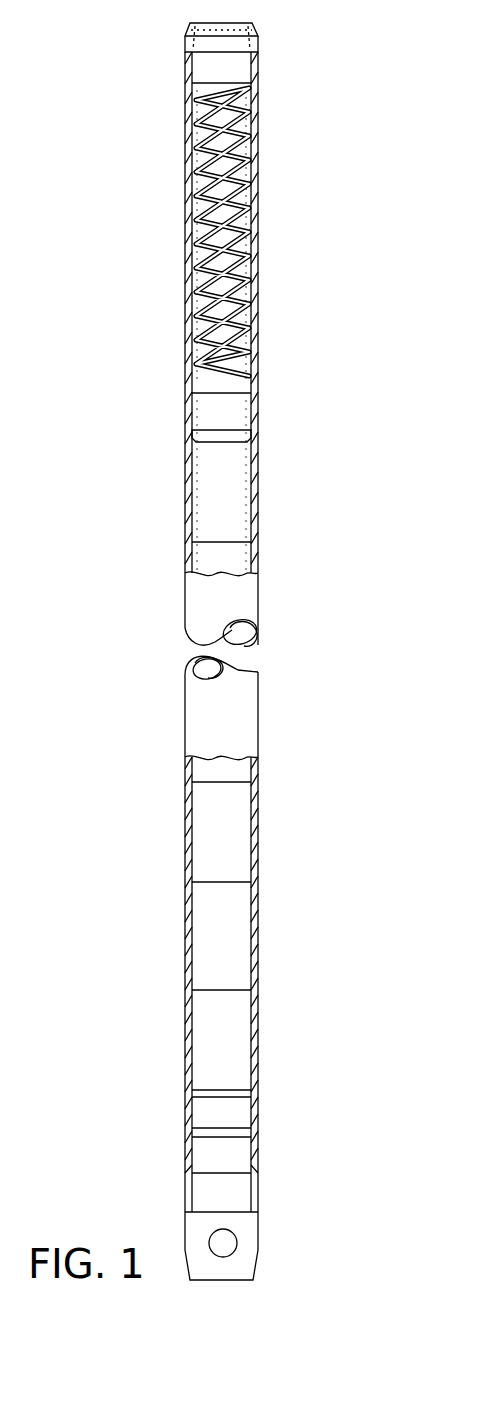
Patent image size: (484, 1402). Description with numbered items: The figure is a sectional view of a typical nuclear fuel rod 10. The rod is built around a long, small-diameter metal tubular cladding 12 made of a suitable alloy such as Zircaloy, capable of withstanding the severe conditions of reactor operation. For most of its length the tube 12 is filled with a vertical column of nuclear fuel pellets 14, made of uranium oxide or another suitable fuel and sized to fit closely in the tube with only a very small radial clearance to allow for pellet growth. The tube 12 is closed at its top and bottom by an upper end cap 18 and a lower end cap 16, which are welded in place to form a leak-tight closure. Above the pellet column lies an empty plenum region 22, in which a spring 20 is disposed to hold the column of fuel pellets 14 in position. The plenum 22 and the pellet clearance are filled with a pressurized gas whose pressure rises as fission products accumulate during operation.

The fuel rod 10 is at (335, 494).
The tubular cladding 12 is at (260, 728).
The nuclear fuel pellets 14 is at (242, 920).
The lower end cap 16 is at (250, 1192).
The upper end cap 18 is at (186, 36).
The spring 20 is at (197, 282).
The plenum region 22 is at (258, 252).